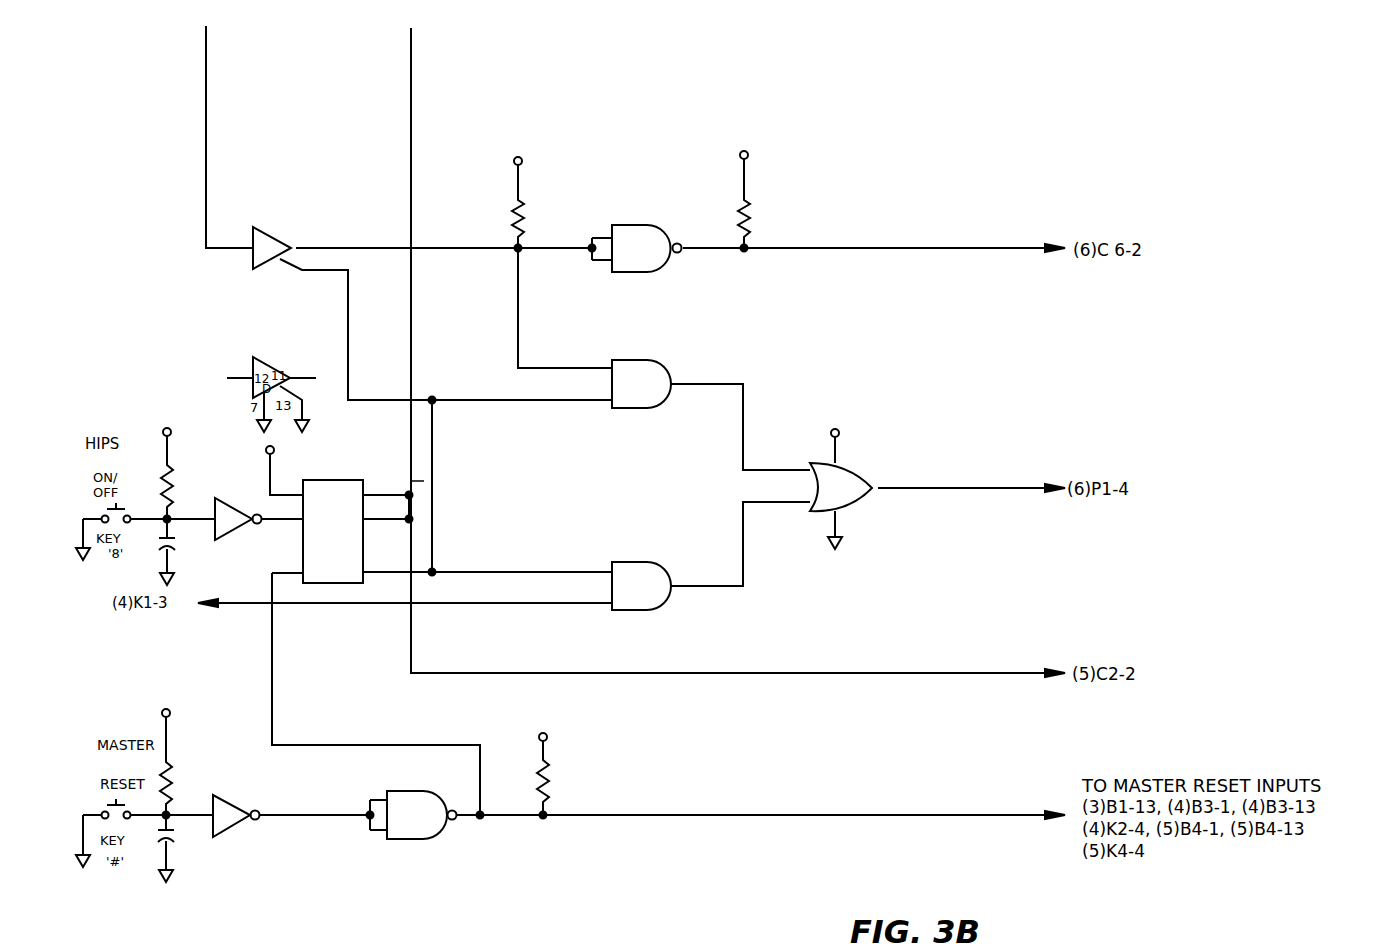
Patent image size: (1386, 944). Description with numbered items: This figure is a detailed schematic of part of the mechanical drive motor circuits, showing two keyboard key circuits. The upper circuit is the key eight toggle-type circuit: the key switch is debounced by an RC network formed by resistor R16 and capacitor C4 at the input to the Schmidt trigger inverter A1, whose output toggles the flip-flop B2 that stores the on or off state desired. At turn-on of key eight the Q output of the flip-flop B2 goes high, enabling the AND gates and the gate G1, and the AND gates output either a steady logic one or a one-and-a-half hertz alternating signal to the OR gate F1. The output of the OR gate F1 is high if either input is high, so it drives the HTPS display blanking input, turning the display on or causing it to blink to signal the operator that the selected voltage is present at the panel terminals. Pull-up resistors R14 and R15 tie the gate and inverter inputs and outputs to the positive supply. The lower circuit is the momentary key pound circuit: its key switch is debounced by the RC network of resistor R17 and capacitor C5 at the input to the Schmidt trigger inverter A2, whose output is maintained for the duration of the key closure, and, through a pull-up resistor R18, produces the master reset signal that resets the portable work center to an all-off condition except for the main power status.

The gate IC-G1-C G1 is at (278, 249).
The OR gate IC-F1-C F1 is at (850, 486).
The Schmidt trigger inverter A1 is at (259, 509).
The Schmidt trigger inverter A2 is at (291, 823).
The flip-flop B2 is at (337, 512).
The resistor R14 is at (516, 201).
The resistor R15 is at (764, 198).
The resistor R16 is at (183, 472).
The resistor R17 is at (184, 761).
The resistor R18 is at (562, 771).
The capacitor C4 is at (185, 554).
The capacitor C5 is at (180, 856).